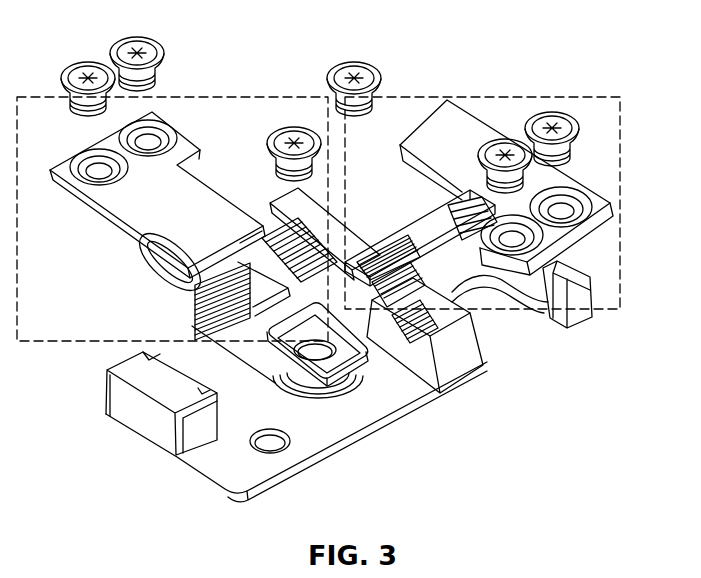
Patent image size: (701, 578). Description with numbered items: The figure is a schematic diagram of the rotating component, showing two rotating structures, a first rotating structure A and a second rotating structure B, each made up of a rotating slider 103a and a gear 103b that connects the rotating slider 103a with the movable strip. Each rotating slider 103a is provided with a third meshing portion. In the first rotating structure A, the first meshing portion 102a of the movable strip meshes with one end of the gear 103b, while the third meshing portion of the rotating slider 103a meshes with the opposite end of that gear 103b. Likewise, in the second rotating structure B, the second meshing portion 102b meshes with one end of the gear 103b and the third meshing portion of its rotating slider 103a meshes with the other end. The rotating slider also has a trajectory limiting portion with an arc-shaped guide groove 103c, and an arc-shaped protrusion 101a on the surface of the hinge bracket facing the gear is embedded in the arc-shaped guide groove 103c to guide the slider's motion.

The arc-shaped protrusion 101a is at (218, 388).
The first meshing portion 102a is at (277, 193).
The second meshing portion 102b is at (435, 408).
The rotating slider 103a is at (172, 204).
The gear 103b is at (177, 318).
The arc-shaped guide groove 103c is at (143, 281).
The first rotating structure A is at (192, 97).
The second rotating structure B is at (535, 97).